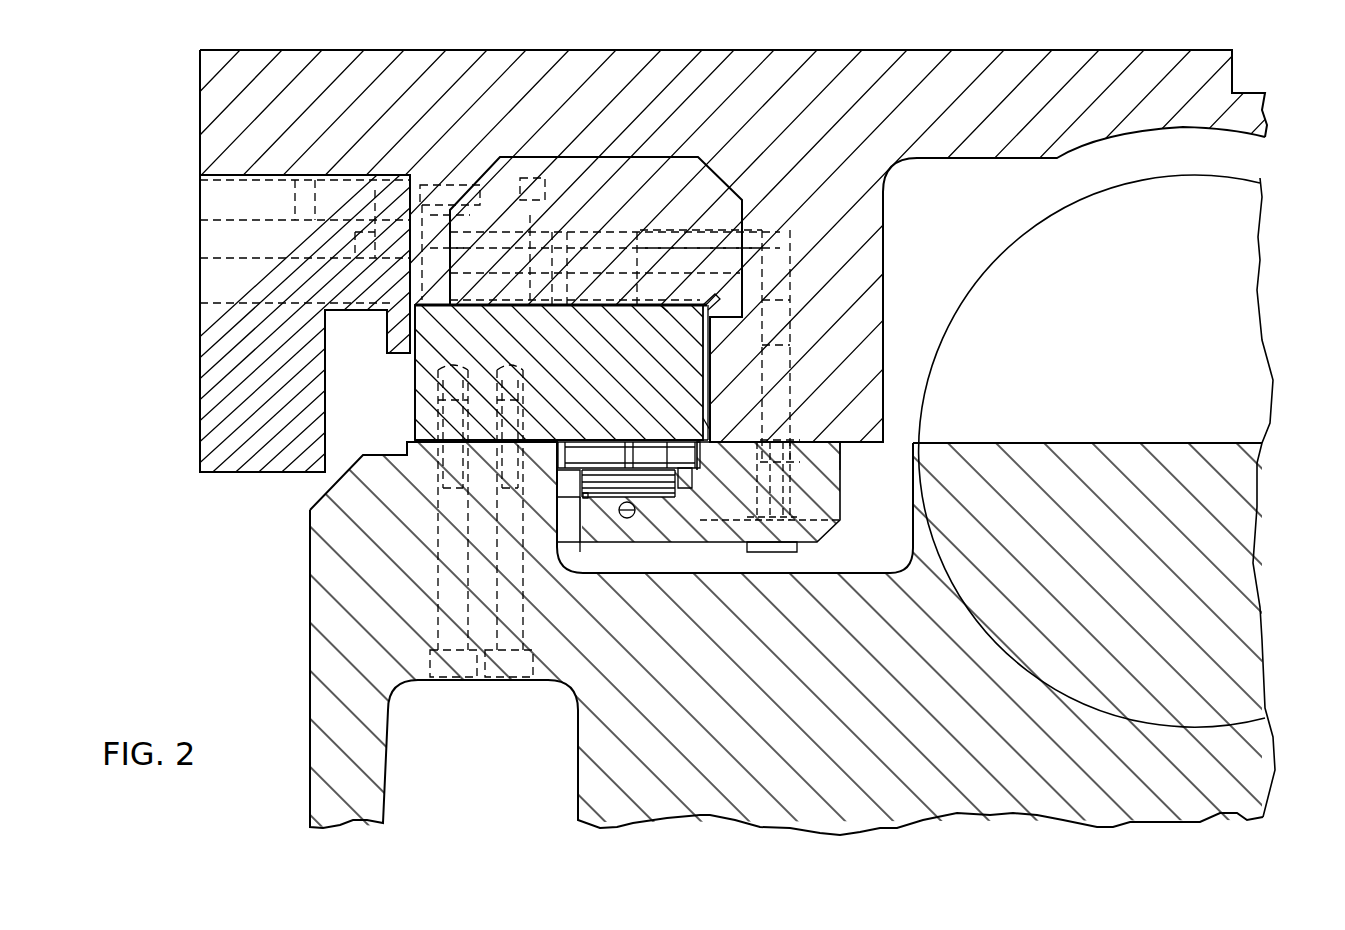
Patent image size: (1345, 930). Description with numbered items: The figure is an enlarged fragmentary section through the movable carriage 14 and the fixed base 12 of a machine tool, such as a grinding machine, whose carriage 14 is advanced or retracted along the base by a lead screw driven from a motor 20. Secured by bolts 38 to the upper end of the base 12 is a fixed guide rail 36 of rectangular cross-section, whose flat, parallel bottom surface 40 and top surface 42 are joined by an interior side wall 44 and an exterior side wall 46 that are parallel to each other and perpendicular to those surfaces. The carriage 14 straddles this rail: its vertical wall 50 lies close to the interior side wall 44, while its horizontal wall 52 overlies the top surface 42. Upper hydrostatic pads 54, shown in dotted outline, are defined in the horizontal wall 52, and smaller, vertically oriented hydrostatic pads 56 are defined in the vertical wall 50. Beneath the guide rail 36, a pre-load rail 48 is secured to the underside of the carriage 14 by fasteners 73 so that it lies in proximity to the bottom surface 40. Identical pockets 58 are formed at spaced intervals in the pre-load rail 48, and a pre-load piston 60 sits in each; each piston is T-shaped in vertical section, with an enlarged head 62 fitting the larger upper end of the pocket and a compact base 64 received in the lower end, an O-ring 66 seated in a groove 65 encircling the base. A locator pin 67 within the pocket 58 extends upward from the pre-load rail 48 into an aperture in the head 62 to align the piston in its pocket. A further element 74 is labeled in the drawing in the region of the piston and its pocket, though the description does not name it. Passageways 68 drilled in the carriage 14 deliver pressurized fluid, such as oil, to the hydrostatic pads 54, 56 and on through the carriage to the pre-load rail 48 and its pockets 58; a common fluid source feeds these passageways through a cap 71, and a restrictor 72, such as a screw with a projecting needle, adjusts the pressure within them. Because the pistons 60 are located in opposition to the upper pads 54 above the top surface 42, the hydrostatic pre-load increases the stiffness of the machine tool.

The fixed base 12 is at (820, 805).
The carriage 14 is at (843, 88).
The motor 20 is at (1230, 515).
The guide rail 36 is at (602, 378).
The bolts 38 is at (437, 612).
The bottom surface 40 is at (548, 455).
The top surface 42 is at (668, 310).
The interior side wall 44 is at (705, 418).
The exterior side wall 46 is at (415, 410).
The pre-load rail 48 is at (735, 505).
The vertical wall 50 is at (710, 427).
The horizontal wall 52 is at (558, 300).
The upper hydrostatic pads 54 is at (645, 300).
The vertically oriented hydrostatic pads 56 is at (775, 352).
The pockets 58 is at (595, 502).
The pre-load piston 60 is at (553, 497).
The enlarged head 62 is at (683, 450).
The compact base 64 is at (700, 495).
The groove 65 is at (582, 495).
The O-ring 66 is at (580, 545).
The locator pin 67 is at (840, 460).
The passageways 68 is at (533, 237).
The cap 71 is at (218, 400).
The restrictor 72 is at (465, 232).
The fasteners 73 is at (797, 545).
The O-ring groove 74 is at (635, 512).